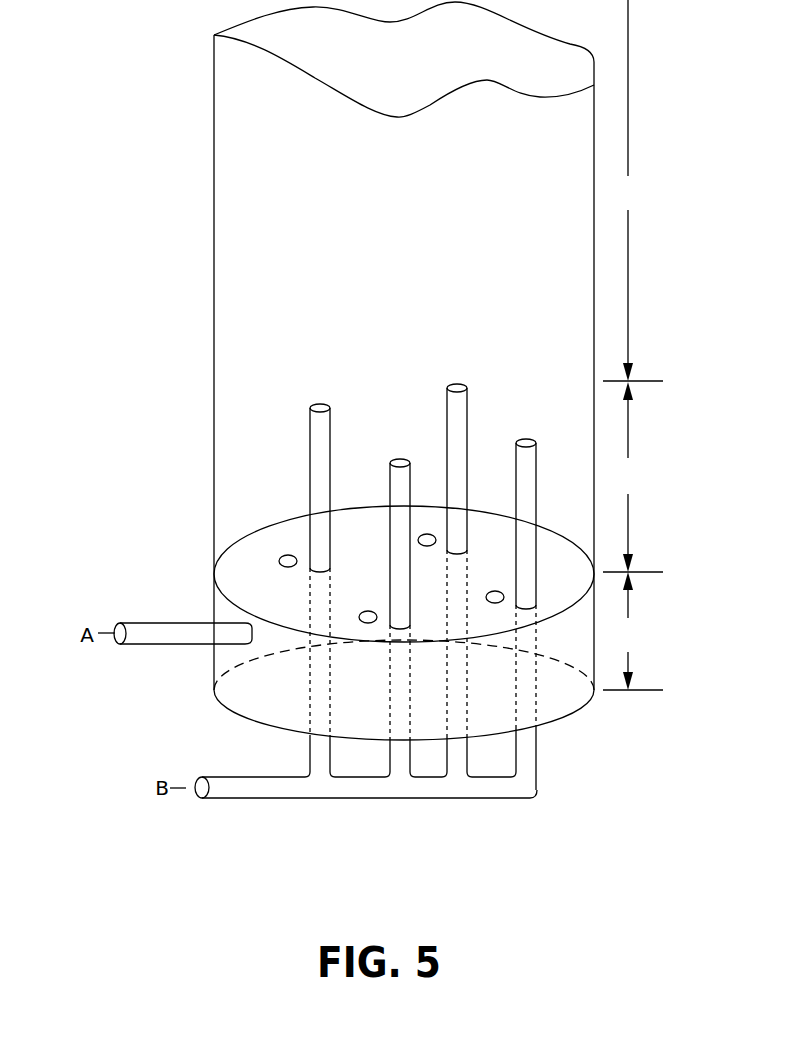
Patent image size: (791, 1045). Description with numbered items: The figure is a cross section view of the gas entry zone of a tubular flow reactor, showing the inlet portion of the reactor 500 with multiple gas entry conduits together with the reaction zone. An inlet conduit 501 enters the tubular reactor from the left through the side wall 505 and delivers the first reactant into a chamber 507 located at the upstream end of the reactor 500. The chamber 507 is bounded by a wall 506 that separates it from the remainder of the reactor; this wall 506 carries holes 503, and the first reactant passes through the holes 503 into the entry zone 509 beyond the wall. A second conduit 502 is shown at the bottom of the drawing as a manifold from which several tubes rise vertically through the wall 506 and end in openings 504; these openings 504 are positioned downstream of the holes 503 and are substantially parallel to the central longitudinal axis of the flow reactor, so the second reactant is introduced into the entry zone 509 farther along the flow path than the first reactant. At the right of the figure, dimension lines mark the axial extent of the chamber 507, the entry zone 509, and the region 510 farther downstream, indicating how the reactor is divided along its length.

The reactor 500 is at (175, 86).
The inlet conduit 501 is at (158, 623).
The second conduit 502 is at (265, 802).
The holes 503 is at (362, 613).
The openings 504 is at (526, 440).
The side wall 505 is at (200, 237).
The wall 506 is at (228, 582).
The chamber 507 is at (113, 678).
The entry zone 509 is at (633, 477).
The upper region height 510 is at (633, 190).